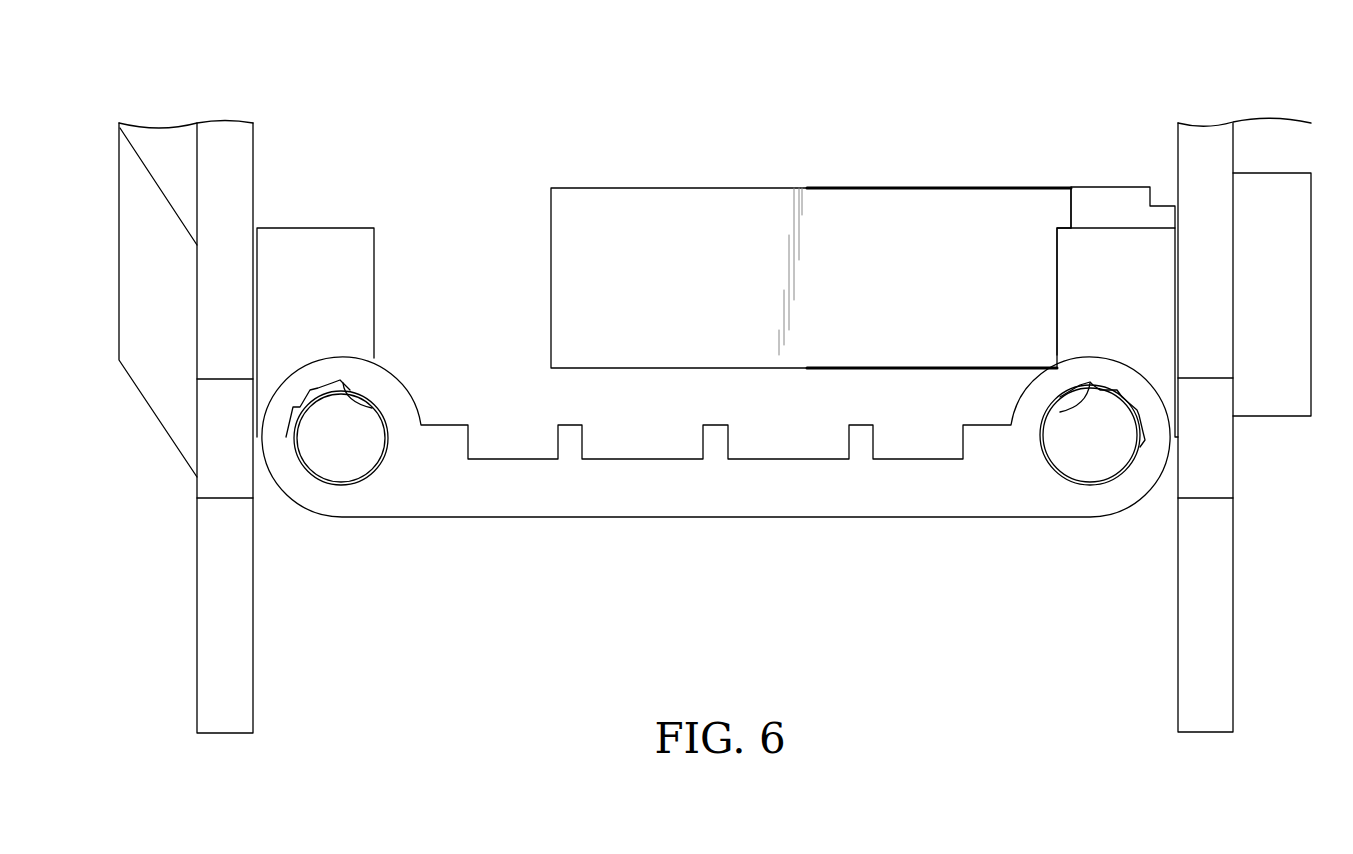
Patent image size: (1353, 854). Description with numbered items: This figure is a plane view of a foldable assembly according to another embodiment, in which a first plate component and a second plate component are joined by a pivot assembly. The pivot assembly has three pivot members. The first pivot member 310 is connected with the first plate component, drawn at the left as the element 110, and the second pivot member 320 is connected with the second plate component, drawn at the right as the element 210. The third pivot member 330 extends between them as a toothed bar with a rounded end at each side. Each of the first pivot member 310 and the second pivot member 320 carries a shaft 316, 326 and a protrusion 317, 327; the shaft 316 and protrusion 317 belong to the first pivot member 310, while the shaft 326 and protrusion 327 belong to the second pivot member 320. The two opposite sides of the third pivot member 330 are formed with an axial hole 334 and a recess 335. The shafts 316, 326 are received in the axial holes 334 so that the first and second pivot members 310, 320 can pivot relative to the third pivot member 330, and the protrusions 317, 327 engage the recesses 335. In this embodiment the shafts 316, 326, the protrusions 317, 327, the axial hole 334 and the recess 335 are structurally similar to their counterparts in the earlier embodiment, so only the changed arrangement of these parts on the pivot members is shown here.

The first housing 110 is at (225, 145).
The second housing 210 is at (1205, 152).
The first pivot member 310 is at (315, 255).
The second pivot member 320 is at (1118, 263).
The third pivot member 330 is at (642, 490).
The shaft 316 is at (342, 447).
The shaft 326 is at (1090, 446).
The axial hole 334 is at (390, 447).
The recess 335 is at (317, 387).
The protrusion 317 is at (362, 407).
The protrusion 327 is at (1088, 385).